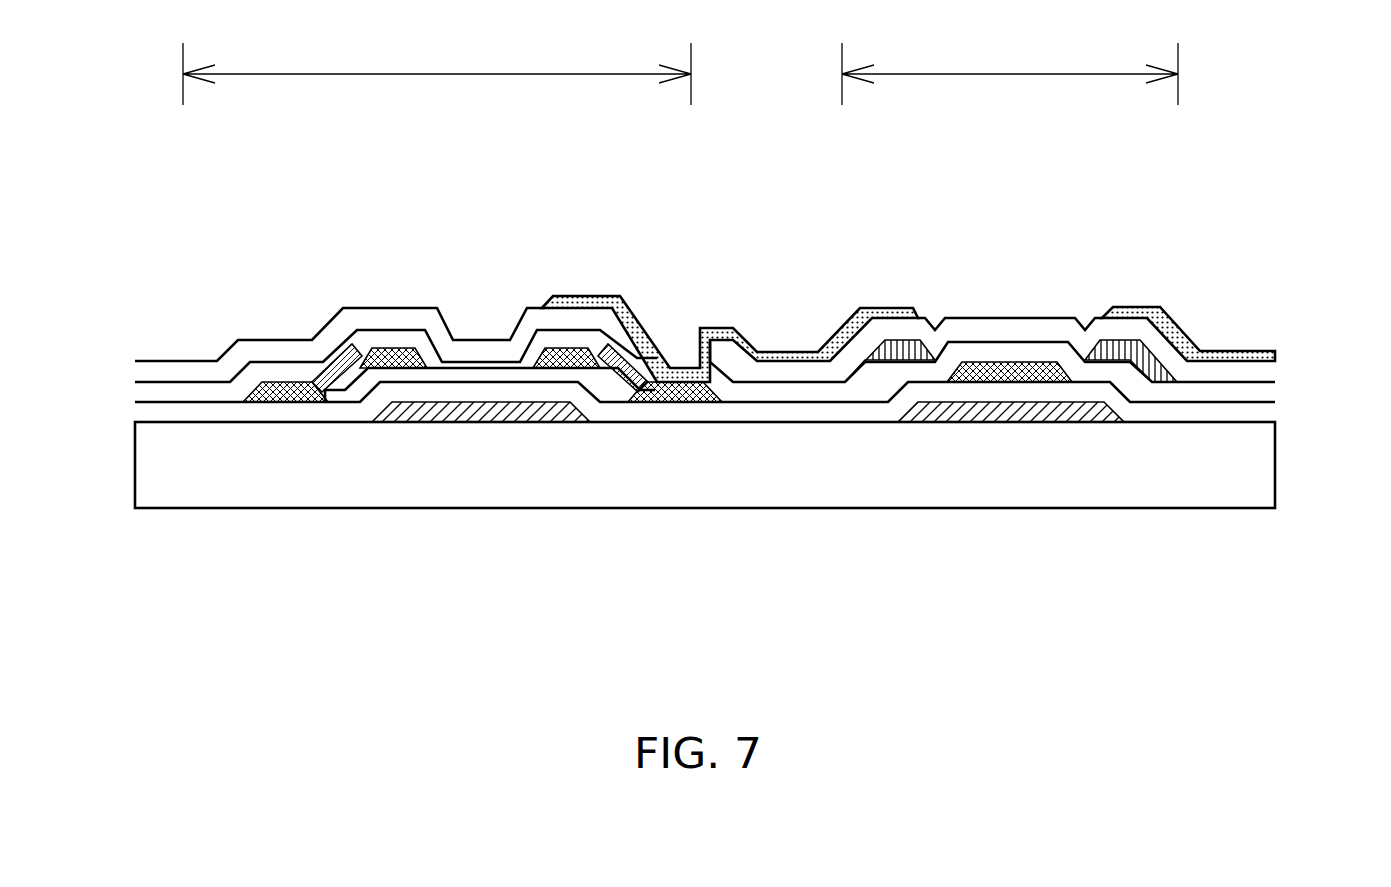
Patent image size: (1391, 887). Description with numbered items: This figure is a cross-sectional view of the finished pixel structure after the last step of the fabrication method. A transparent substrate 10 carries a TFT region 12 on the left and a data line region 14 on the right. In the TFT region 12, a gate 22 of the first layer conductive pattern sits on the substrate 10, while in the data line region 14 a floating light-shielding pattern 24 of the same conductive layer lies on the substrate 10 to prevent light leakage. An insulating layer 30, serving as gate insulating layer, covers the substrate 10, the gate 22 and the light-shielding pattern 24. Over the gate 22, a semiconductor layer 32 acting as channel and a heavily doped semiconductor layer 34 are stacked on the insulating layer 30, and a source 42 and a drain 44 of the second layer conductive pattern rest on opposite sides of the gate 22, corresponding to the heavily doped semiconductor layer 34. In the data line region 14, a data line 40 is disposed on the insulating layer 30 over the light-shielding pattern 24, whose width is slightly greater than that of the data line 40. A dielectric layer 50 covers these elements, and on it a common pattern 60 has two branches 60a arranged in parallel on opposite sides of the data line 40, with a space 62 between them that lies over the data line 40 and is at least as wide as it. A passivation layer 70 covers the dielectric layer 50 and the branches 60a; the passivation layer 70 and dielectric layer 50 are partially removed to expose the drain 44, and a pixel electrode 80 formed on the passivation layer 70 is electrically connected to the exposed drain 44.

The substrate 10 is at (746, 481).
The TFT region 12 is at (437, 73).
The data line region 14 is at (1010, 73).
The gate 22 is at (483, 424).
The light-shielding pattern 24 is at (1012, 424).
The insulating layer 30 is at (135, 404).
The semiconductor layer 32 is at (484, 380).
The heavily doped semiconductor layer 34 is at (394, 362).
The data line 40 is at (1012, 360).
The source 42 is at (364, 354).
The drain 44 is at (606, 352).
The dielectric layer 50 is at (135, 383).
The common pattern 60 is at (1011, 237).
The branches 60a is at (886, 342).
The space 62 is at (1085, 283).
The passivation layer 70 is at (135, 362).
The pixel electrode 80 is at (703, 342).